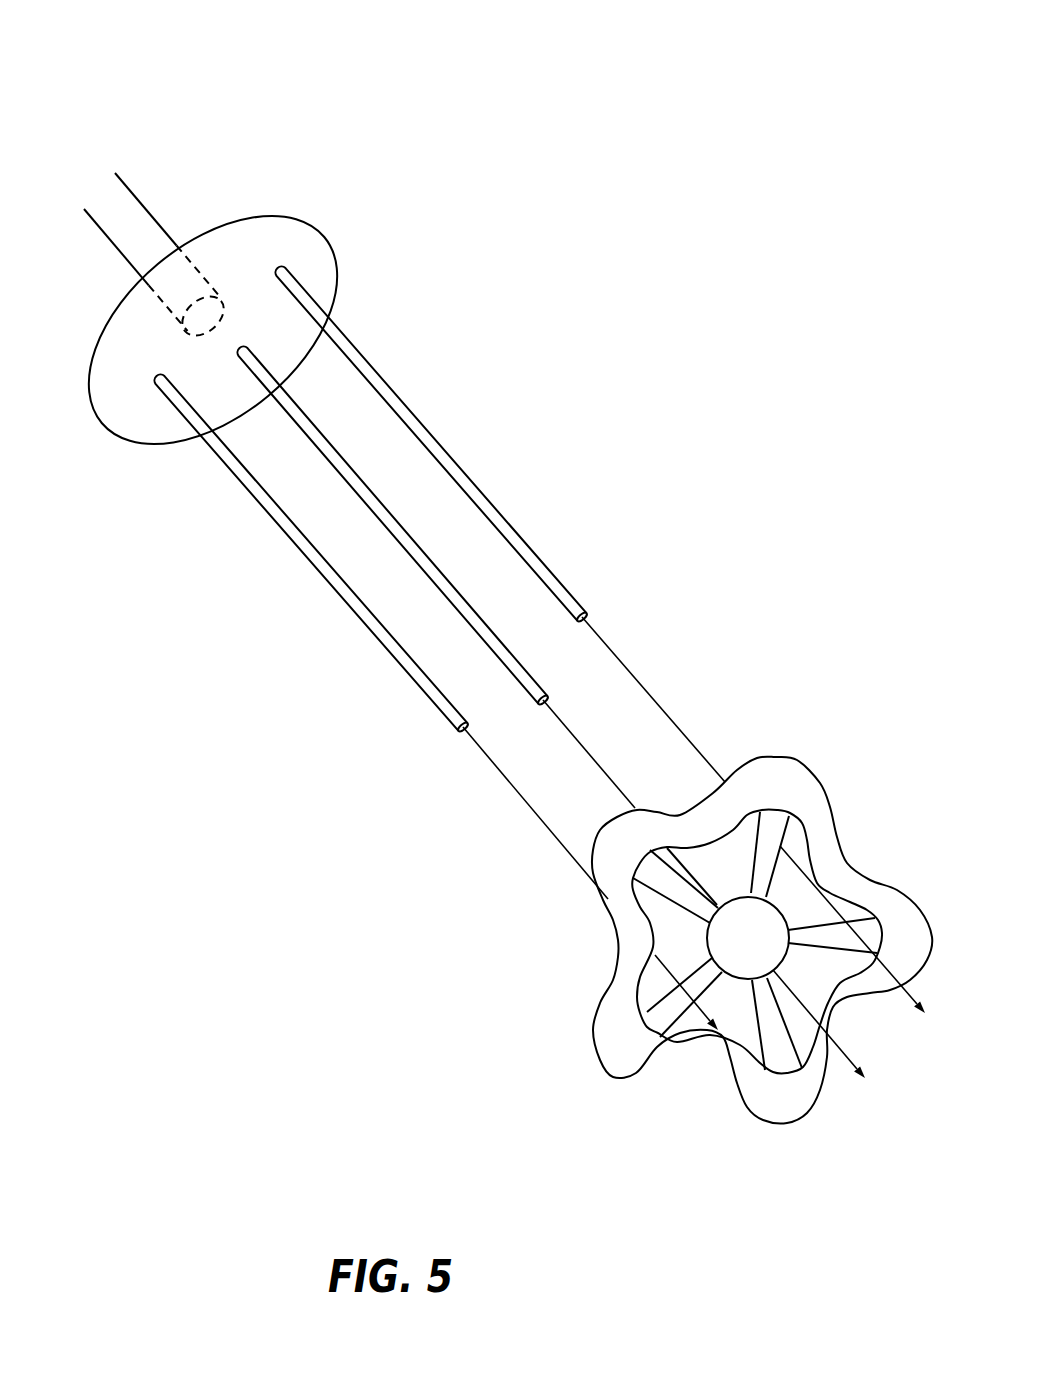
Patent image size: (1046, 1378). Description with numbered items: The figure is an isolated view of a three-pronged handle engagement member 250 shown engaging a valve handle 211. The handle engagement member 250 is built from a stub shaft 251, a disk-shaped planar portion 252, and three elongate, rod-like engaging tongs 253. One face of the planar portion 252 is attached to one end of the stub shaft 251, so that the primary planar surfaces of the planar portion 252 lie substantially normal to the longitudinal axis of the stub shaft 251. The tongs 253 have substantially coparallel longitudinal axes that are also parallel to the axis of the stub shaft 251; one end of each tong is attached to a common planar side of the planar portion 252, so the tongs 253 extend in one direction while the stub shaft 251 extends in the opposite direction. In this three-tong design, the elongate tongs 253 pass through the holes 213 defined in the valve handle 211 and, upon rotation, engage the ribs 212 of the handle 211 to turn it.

The three-pronged handle engagement member 250 is at (470, 98).
The stub shaft 251 is at (133, 207).
The planar portion 252 is at (300, 240).
The tongs 253 is at (398, 521).
The handle 211 is at (785, 772).
The ribs 212 is at (665, 1013).
The holes 213 is at (743, 1035).